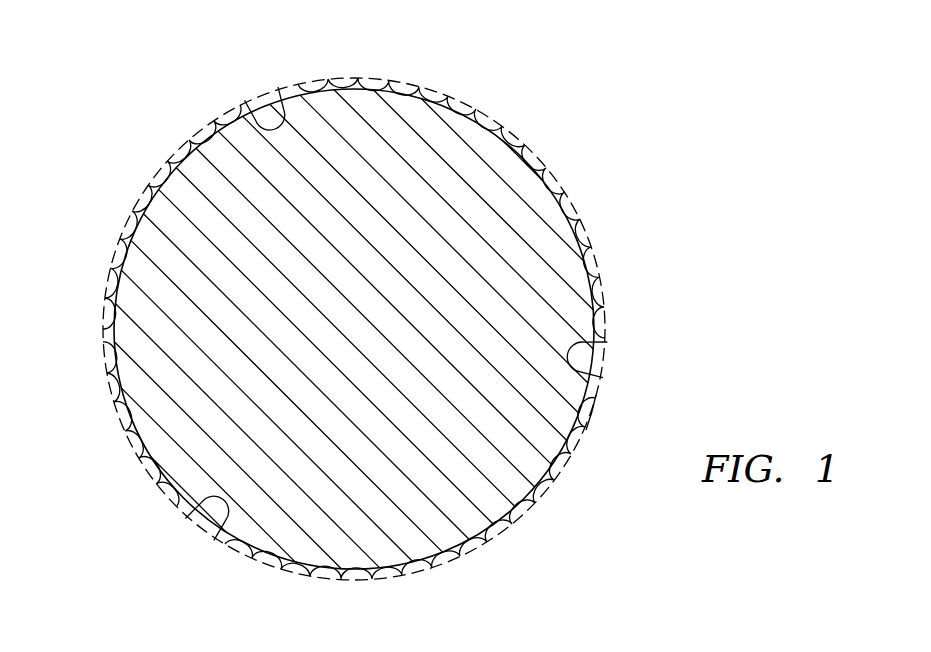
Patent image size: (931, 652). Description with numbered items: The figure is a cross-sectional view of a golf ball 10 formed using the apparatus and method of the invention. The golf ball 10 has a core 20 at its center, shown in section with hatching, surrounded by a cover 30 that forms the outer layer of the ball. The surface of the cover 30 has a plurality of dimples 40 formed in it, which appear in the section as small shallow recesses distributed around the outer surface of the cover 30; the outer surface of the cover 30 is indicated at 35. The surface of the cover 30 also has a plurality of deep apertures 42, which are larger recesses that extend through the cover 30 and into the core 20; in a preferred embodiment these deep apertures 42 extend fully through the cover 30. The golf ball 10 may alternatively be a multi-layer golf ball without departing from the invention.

The golf ball 10 is at (612, 61).
The core 20 is at (413, 142).
The cover 30 is at (513, 133).
The outer surface of coating 35 is at (590, 434).
The dimples 40 is at (353, 86).
The deep apertures 42 is at (272, 126).